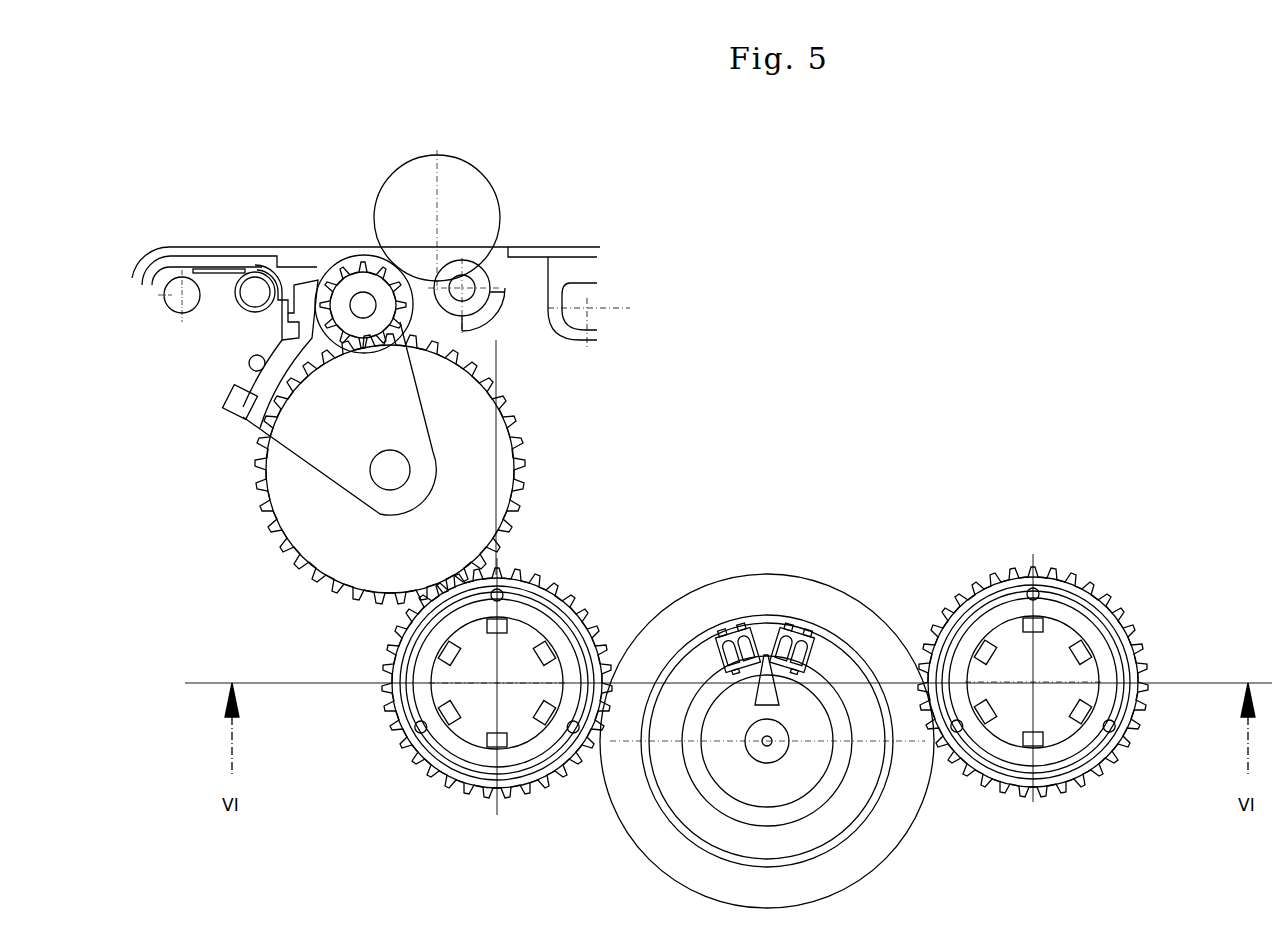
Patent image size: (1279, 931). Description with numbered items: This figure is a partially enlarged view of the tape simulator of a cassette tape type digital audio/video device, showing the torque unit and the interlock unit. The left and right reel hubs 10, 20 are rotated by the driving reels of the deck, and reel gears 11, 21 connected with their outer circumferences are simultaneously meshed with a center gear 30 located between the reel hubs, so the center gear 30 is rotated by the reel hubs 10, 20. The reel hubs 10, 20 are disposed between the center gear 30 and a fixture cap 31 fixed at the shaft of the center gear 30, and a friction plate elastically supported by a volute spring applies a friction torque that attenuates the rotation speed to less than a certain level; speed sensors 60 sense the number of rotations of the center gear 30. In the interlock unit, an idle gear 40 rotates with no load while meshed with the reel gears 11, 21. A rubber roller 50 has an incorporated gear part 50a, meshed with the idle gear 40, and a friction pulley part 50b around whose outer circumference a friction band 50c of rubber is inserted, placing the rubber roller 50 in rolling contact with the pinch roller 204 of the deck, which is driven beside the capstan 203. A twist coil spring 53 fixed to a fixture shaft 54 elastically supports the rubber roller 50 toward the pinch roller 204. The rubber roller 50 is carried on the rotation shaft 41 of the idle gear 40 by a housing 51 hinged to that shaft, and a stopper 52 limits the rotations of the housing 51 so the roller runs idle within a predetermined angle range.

The left reel hub 10 is at (467, 740).
The reel gear 11 is at (420, 762).
The right reel hub 20 is at (1058, 748).
The reel gear 21 is at (1113, 730).
The center gear 30 is at (653, 810).
The fixture cap 31 is at (795, 768).
The idle gear 40 is at (320, 548).
The rotation shaft 41 is at (390, 474).
The rubber roller 50 is at (370, 172).
The gear part 50a is at (333, 283).
The friction pulley part 50b is at (367, 262).
The friction band 50c is at (342, 268).
The housing 51 is at (317, 448).
The stopper 52 is at (249, 363).
The twist coil spring 53 is at (210, 277).
The fixture shaft 54 is at (252, 287).
The speed sensors 60 is at (790, 632).
The capstan 203 is at (463, 283).
The pinch roller 204 is at (443, 210).